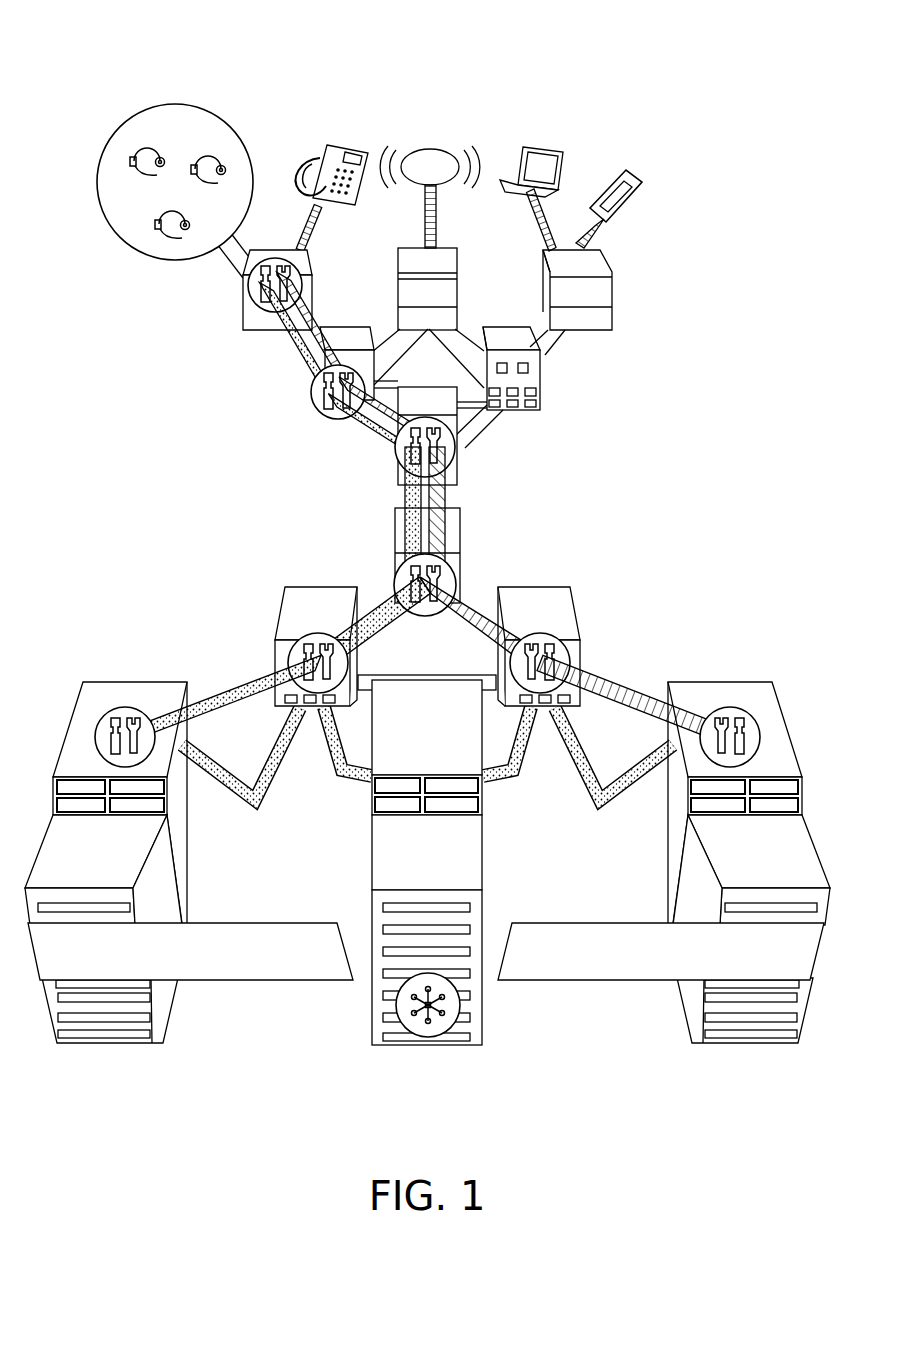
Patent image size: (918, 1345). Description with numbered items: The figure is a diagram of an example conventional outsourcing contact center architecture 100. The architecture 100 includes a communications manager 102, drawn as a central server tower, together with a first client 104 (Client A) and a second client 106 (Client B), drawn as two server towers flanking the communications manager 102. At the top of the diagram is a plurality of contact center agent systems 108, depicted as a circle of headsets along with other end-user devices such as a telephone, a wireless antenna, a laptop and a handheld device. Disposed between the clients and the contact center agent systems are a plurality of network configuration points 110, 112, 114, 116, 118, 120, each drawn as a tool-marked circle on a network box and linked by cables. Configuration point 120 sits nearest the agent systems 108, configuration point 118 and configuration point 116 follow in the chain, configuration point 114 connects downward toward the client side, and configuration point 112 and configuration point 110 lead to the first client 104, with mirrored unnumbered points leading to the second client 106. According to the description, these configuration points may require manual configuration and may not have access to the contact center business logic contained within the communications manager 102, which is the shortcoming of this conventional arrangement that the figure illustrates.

The conventional outsourcing contact center architecture 100 is at (170, 26).
The communications manager 102 is at (427, 911).
The first client 104 is at (189, 862).
The second client 106 is at (664, 862).
The contact center agent systems 108 is at (182, 159).
The network configuration point 110 is at (130, 708).
The network configuration point 112 is at (312, 634).
The network configuration point 114 is at (397, 578).
The network configuration point 116 is at (397, 452).
The network configuration point 118 is at (317, 373).
The network configuration point 120 is at (245, 307).